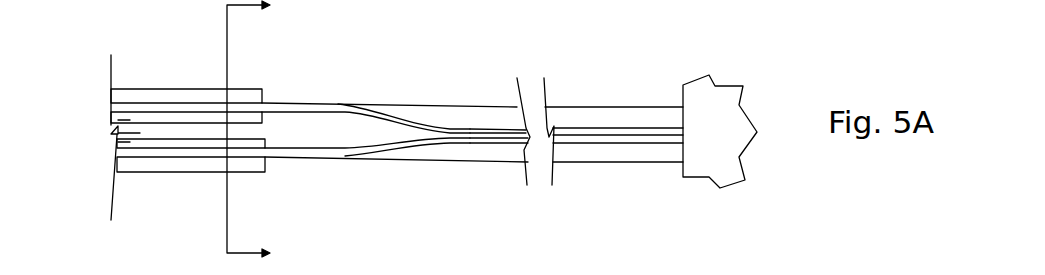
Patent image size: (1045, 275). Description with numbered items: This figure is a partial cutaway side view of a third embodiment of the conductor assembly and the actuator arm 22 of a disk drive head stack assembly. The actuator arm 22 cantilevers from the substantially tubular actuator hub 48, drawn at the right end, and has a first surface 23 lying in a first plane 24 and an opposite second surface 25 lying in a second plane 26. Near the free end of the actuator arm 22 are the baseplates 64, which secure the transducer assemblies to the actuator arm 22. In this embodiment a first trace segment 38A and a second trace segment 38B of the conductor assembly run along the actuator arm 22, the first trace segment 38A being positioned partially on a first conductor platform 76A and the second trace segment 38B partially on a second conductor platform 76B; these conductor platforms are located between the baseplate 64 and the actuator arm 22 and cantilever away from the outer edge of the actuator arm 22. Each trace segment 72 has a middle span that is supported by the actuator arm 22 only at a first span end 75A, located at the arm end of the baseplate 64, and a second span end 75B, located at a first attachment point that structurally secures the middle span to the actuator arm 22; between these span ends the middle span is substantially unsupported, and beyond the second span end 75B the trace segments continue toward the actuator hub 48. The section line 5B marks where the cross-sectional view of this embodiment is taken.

The actuator arm 22 is at (115, 132).
The first surface 23 is at (446, 107).
The first plane 24 is at (498, 107).
The second surface 25 is at (474, 162).
The second plane 26 is at (510, 145).
The first trace segment 38A is at (387, 116).
The second trace segment 38B is at (390, 146).
The actuator hub 48 is at (725, 103).
The baseplate 64 is at (177, 95).
The trace segment region 72 is at (330, 103).
The first span end 75A is at (264, 103).
The second span end 75B is at (474, 126).
The first conductor platform 76A is at (128, 119).
The second conductor platform 76B is at (128, 142).
The section line 5B- 5B is at (266, 134).